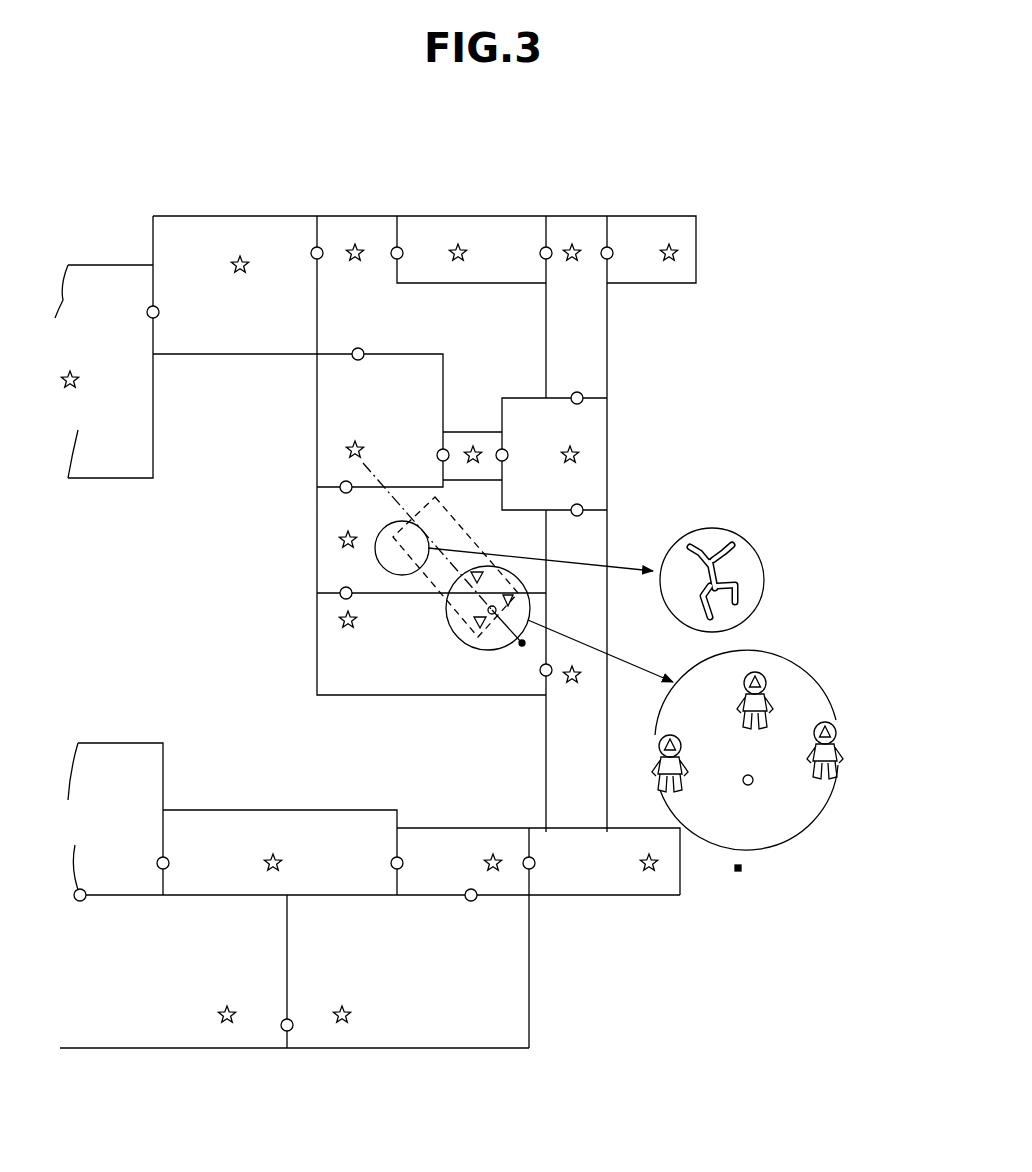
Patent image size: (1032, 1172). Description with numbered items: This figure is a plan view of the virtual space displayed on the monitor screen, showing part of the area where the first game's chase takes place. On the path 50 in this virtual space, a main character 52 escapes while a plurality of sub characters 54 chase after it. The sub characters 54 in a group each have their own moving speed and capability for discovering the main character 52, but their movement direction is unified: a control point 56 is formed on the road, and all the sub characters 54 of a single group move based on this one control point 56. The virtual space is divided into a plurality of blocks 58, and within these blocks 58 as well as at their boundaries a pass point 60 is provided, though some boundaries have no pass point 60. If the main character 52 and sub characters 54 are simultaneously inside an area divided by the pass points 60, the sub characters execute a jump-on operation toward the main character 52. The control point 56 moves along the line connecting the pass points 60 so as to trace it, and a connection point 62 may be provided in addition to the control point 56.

The path 50 is at (187, 225).
The main character 52 is at (765, 576).
The sub character 54 is at (640, 795).
The control point 56 is at (492, 616).
The block 58 is at (320, 216).
The pass point 60 is at (158, 308).
The connection point 62 is at (522, 647).